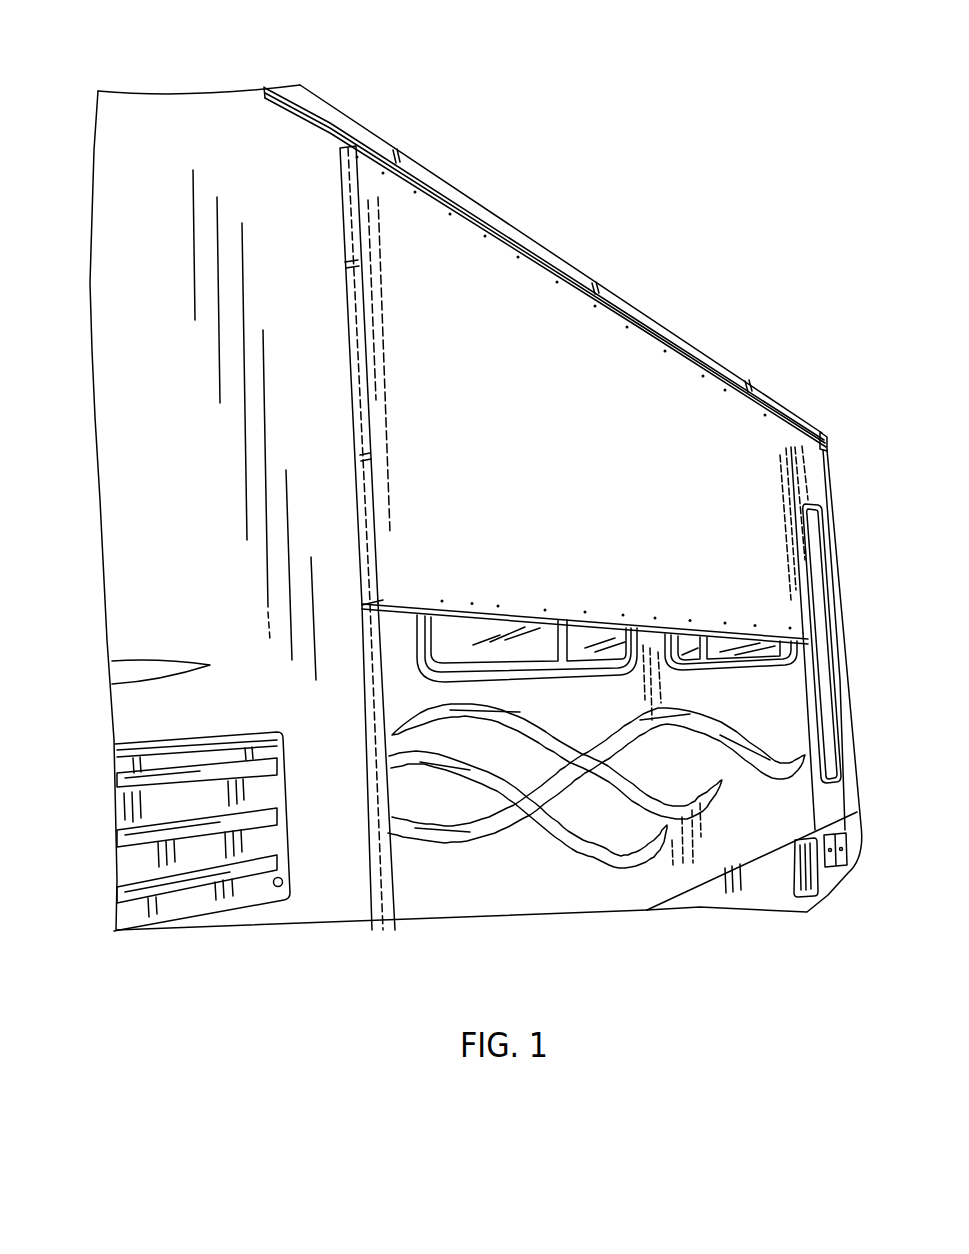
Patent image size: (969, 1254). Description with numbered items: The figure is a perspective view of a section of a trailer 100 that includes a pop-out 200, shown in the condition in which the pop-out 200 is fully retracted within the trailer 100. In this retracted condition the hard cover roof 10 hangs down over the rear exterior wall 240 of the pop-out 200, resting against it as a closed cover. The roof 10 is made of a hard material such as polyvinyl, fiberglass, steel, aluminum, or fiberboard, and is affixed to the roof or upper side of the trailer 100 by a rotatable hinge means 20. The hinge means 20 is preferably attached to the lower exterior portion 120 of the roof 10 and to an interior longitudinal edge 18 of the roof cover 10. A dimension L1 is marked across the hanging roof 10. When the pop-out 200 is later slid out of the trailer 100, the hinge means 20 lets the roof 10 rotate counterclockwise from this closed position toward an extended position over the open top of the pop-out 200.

The trailer 100 is at (148, 561).
The lower exterior portion of roof 120 is at (330, 147).
The interior longitudinal edge of roof cover 18 is at (484, 228).
The rotatable hinge means 20 is at (585, 283).
The hard cover roof 10 is at (710, 387).
The panel length L1 is at (358, 445).
The pop-out 200 is at (767, 708).
The rear exterior wall of pop-out 240 is at (408, 701).